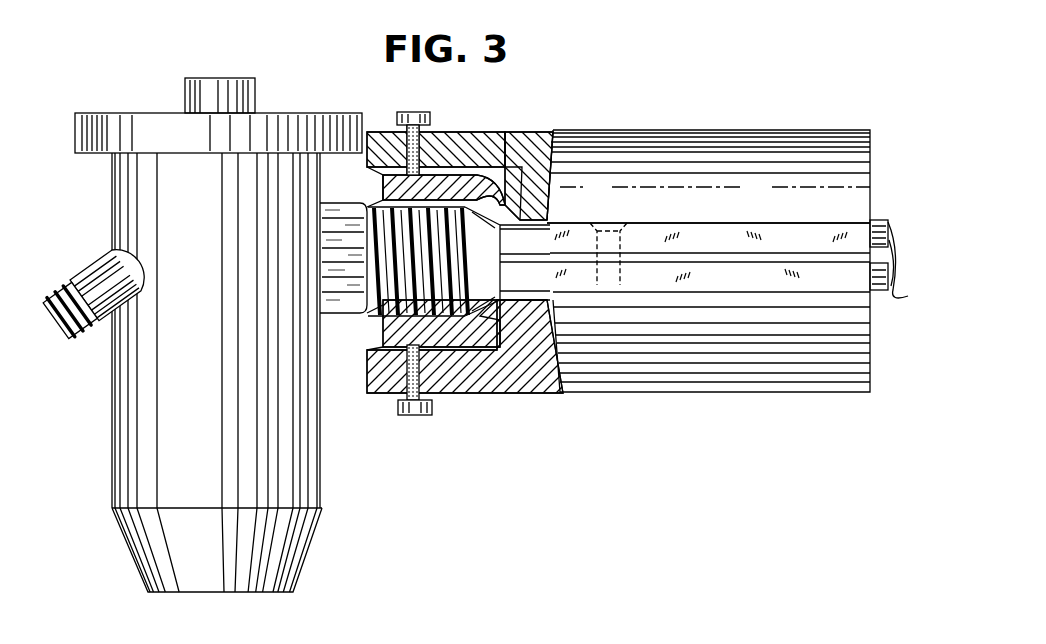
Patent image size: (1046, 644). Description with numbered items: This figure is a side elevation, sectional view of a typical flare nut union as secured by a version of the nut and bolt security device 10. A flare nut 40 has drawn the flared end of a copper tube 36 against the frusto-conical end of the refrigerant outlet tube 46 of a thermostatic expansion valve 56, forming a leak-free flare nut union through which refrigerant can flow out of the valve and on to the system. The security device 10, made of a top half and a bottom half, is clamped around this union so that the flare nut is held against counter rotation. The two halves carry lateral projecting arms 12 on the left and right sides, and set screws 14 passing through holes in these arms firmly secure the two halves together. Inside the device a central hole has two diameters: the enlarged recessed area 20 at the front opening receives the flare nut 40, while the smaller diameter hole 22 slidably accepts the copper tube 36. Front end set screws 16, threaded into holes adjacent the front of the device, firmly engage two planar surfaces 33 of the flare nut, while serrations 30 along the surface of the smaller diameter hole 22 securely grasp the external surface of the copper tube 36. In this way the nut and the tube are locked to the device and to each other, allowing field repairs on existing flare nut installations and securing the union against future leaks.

The nut and bolt security device 10 is at (622, 100).
The lateral projecting arms 12 is at (733, 222).
The set screws 14 is at (614, 222).
The front end set screws 16 is at (432, 404).
The recessed area 20 is at (383, 178).
The smaller diameter hole 22 is at (537, 380).
The serrations 30 is at (532, 208).
The planar surface 33 is at (380, 360).
The copper tube 36 is at (902, 293).
The flare nut 40 is at (455, 170).
The refrigerant outlet tube 46 is at (363, 320).
The thermostatic expansion valve 56 is at (157, 68).